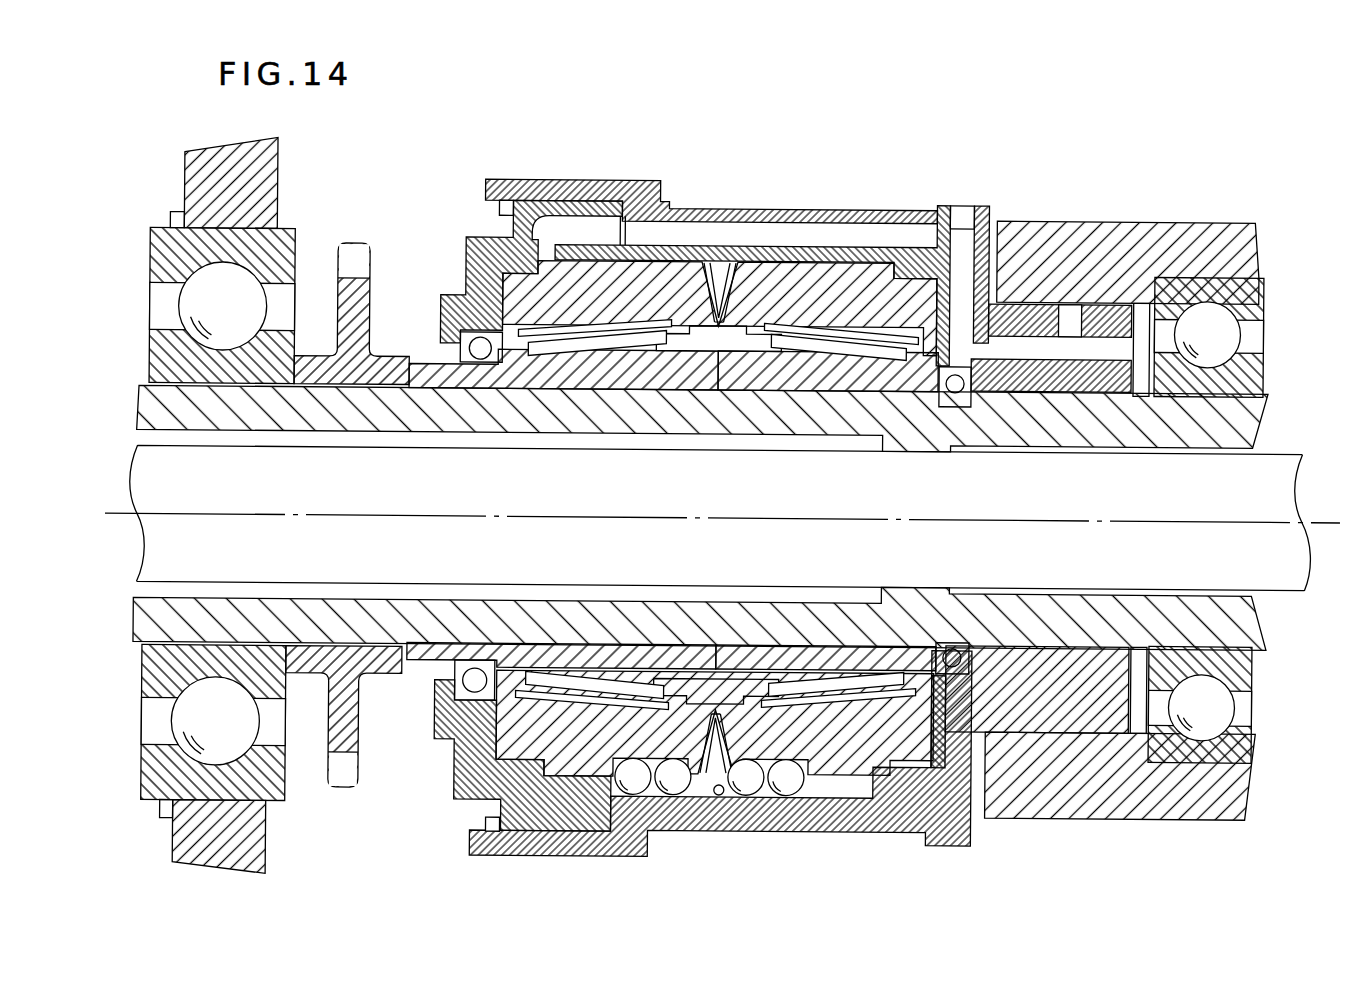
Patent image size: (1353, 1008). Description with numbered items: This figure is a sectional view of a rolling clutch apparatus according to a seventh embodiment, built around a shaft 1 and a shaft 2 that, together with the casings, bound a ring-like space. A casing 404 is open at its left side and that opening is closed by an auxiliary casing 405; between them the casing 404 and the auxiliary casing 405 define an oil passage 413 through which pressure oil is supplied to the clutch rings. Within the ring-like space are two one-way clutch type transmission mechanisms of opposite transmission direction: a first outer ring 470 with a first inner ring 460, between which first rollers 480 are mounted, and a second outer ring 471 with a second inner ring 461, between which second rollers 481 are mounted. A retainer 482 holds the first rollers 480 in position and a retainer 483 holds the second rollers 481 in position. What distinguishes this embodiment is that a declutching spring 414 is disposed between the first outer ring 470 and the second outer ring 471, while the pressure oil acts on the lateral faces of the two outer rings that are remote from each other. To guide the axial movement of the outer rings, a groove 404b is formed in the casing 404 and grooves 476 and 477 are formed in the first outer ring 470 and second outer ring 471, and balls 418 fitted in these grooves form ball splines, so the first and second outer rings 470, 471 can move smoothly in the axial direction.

The shaft 1 is at (145, 622).
The shaft 2 is at (1240, 424).
The casing 404 is at (552, 175).
The groove 404b is at (720, 788).
The auxiliary casing 405 is at (465, 239).
The oil passage 413 is at (866, 228).
The declutching spring 414 is at (725, 254).
The balls 418 is at (673, 788).
The first inner ring 460 is at (598, 372).
The second inner ring 461 is at (812, 370).
The first outer ring 470 is at (640, 282).
The second outer ring 471 is at (934, 290).
The groove 476 is at (650, 788).
The groove 477 is at (788, 786).
The first rollers 480 is at (550, 345).
The second rollers 481 is at (880, 345).
The retainer 482 is at (527, 350).
The retainer 483 is at (888, 355).